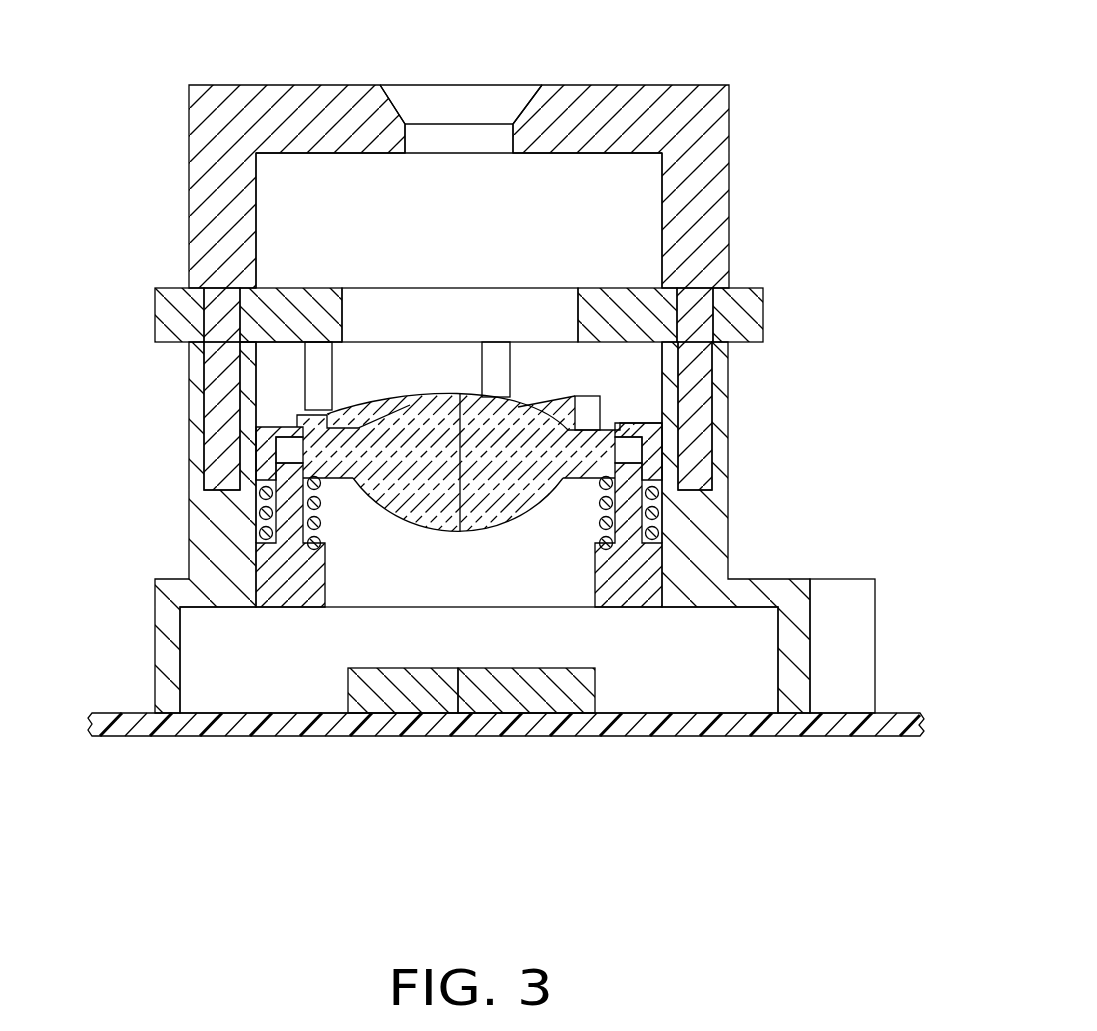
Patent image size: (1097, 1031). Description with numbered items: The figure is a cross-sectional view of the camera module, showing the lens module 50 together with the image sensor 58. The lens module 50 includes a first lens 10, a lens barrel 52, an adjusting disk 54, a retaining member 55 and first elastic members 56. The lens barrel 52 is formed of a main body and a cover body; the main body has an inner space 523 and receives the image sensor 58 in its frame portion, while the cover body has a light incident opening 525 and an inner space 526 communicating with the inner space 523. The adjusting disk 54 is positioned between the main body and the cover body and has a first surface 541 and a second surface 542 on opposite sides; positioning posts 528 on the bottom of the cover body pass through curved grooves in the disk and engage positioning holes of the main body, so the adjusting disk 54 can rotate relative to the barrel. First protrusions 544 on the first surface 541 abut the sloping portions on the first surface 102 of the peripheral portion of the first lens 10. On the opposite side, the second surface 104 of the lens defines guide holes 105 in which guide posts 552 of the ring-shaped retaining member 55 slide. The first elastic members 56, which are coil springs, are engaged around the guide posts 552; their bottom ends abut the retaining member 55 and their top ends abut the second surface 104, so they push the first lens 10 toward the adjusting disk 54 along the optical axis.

The first lens 10 is at (568, 445).
The first surface 102 is at (277, 428).
The second surface 104 is at (338, 485).
The guide holes 105 is at (288, 453).
The lens module 50 is at (617, 616).
The lens barrel 52 is at (678, 98).
The inner space 523 is at (643, 375).
The light incident opening 525 is at (495, 98).
The inner space 526 is at (642, 212).
The positioning posts 528 is at (700, 400).
The adjusting disk 54 is at (747, 312).
The first surface 541 is at (284, 343).
The second surface 542 is at (293, 288).
The first protrusions 544 is at (320, 378).
The retaining member 55 is at (630, 575).
The guide posts 552 is at (655, 495).
The first elastic members 56 is at (660, 527).
The image sensor 58 is at (498, 688).